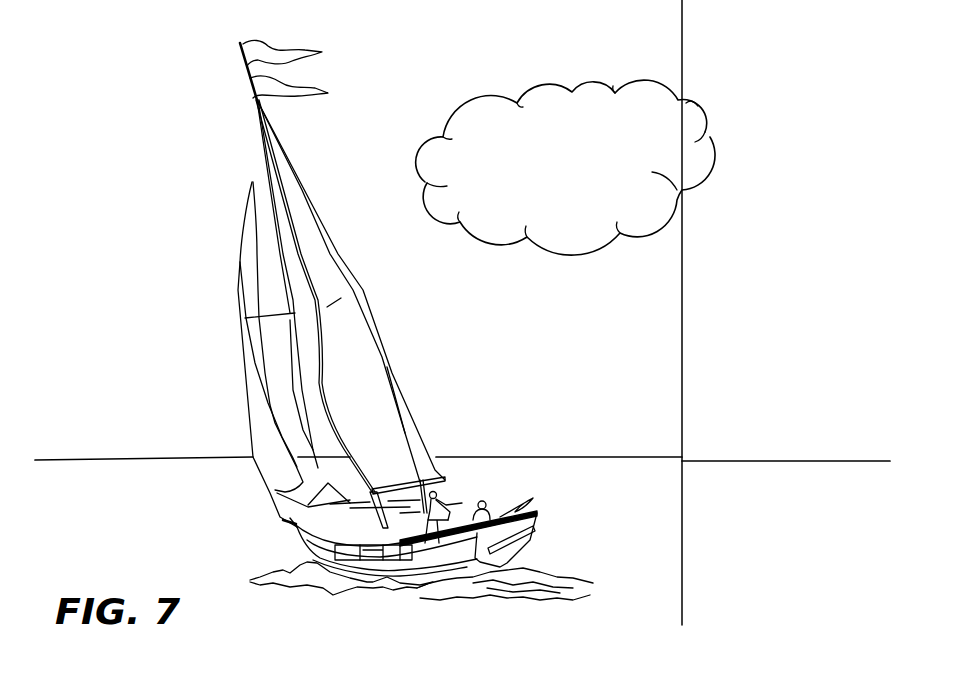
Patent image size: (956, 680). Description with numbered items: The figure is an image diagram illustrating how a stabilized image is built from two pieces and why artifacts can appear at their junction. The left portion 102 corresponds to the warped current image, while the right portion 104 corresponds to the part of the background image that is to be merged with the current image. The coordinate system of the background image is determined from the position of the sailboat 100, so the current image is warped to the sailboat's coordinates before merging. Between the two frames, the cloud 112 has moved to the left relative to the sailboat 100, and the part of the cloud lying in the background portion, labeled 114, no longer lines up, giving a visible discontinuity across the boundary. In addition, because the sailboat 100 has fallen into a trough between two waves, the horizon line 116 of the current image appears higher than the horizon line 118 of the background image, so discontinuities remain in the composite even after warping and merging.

The sailboat 100 is at (285, 148).
The warped current image portion 102 is at (646, 26).
The background image portion 104 is at (771, 26).
The cloud 112 is at (498, 96).
The cloud portion in second region 114 is at (712, 135).
The horizon line of the current image 116 is at (583, 458).
The horizon line of the background image 118 is at (743, 461).